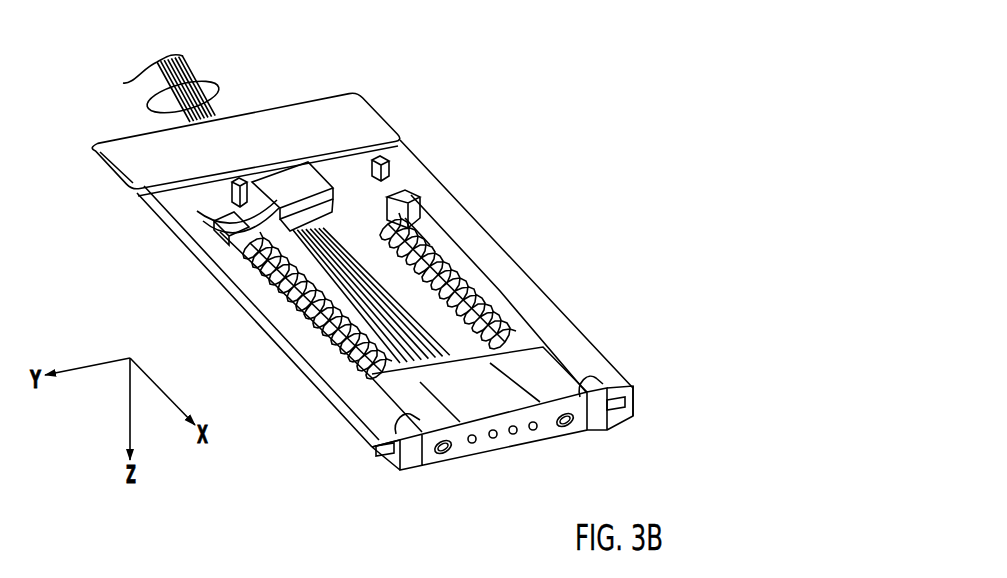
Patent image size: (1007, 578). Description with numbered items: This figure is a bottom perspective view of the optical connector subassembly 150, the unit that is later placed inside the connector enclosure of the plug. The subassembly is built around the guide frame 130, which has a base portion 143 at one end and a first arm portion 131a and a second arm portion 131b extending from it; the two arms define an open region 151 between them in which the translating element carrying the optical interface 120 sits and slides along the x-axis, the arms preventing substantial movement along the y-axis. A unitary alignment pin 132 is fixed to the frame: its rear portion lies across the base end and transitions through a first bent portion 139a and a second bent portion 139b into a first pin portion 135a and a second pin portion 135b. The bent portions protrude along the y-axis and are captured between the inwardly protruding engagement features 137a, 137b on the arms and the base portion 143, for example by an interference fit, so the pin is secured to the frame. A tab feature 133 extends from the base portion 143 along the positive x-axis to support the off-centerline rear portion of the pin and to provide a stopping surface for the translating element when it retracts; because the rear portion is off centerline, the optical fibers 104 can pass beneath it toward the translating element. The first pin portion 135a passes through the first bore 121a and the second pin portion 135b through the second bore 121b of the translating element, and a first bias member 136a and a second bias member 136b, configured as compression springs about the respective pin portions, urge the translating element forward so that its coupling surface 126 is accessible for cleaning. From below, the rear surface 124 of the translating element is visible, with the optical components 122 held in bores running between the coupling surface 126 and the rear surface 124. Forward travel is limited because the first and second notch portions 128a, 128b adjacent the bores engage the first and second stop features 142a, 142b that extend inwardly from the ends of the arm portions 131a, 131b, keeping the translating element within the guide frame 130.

The optical fibers 104 is at (207, 80).
The optical interface 120 is at (485, 422).
The first bore 121a is at (443, 456).
The second bore 121b is at (572, 426).
The optical components 122 is at (534, 431).
The rear surface 124 is at (470, 328).
The coupling surface 126 is at (468, 449).
The first notch portion 128a is at (392, 417).
The second notch portion 128b is at (590, 378).
The guide frame 130 is at (271, 110).
The first arm portion 131a is at (370, 449).
The second arm portion 131b is at (638, 397).
The unitary alignment pin 132 is at (345, 181).
The tab feature 133 is at (294, 182).
The first pin portion 135a is at (298, 296).
The second pin portion 135b is at (455, 274).
The first bias member 136a is at (302, 306).
The second bias member 136b is at (436, 242).
The engagement feature 137a is at (213, 222).
The engagement feature 137b is at (390, 192).
The first bent portion 139a is at (210, 197).
The second bent portion 139b is at (400, 140).
The first stop feature 142a is at (412, 437).
The second stop feature 142b is at (620, 412).
The base portion 143 is at (257, 130).
The optical connector subassembly 150 is at (512, 79).
The open region 151 is at (420, 229).